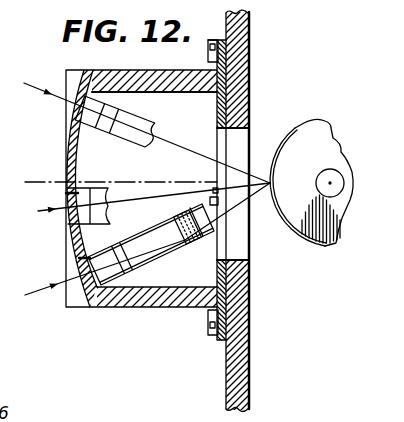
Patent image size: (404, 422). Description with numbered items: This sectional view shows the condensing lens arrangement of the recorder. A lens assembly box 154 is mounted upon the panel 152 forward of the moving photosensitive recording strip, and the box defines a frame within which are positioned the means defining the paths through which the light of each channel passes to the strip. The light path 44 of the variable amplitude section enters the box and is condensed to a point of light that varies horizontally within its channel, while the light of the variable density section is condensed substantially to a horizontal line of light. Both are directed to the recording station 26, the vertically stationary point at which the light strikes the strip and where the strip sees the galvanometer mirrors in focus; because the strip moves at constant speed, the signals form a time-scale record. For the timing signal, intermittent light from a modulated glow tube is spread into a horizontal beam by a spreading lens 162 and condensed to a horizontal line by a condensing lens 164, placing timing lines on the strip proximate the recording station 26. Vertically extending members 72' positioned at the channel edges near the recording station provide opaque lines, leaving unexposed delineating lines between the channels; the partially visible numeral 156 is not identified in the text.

The panel 152 is at (249, 339).
The lens assembly box 154 is at (145, 312).
The spreading lens 162 is at (110, 255).
The condensing lens 164 is at (194, 248).
The light path 44 is at (38, 81).
The vertically extending members 72' is at (224, 164).
The recording station 26 is at (294, 131).
The light source 156 is at (10, 355).